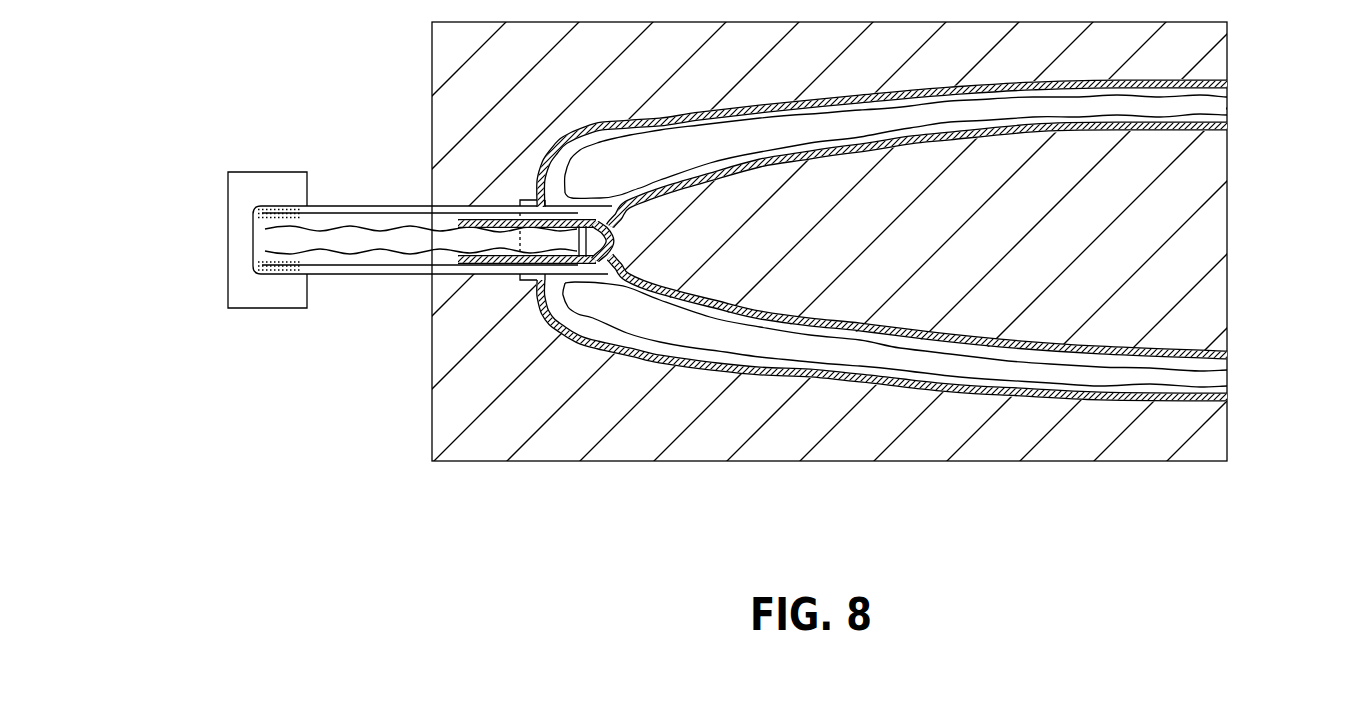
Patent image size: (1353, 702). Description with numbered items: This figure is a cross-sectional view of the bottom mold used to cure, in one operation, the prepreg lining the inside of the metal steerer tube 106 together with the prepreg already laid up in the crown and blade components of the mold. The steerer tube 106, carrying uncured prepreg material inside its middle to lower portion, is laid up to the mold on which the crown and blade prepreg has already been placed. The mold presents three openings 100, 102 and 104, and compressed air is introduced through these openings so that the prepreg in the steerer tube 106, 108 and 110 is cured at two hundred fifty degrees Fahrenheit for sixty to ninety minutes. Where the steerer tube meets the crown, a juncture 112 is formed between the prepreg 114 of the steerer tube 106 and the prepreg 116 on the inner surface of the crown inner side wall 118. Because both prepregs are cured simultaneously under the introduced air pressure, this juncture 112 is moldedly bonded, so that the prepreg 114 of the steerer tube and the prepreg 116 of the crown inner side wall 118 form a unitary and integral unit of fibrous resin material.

The opening 100 is at (232, 243).
The opening 102 is at (1218, 102).
The opening 104 is at (1220, 380).
The steerer tube 106 is at (377, 205).
The prepreg 108 is at (580, 136).
The prepreg 110 is at (915, 89).
The juncture 112 is at (497, 261).
The prepreg of the steerer tube 114 is at (545, 317).
The prepreg of the crown inner side wall 116 is at (614, 254).
The crown inner side wall 118 is at (611, 237).